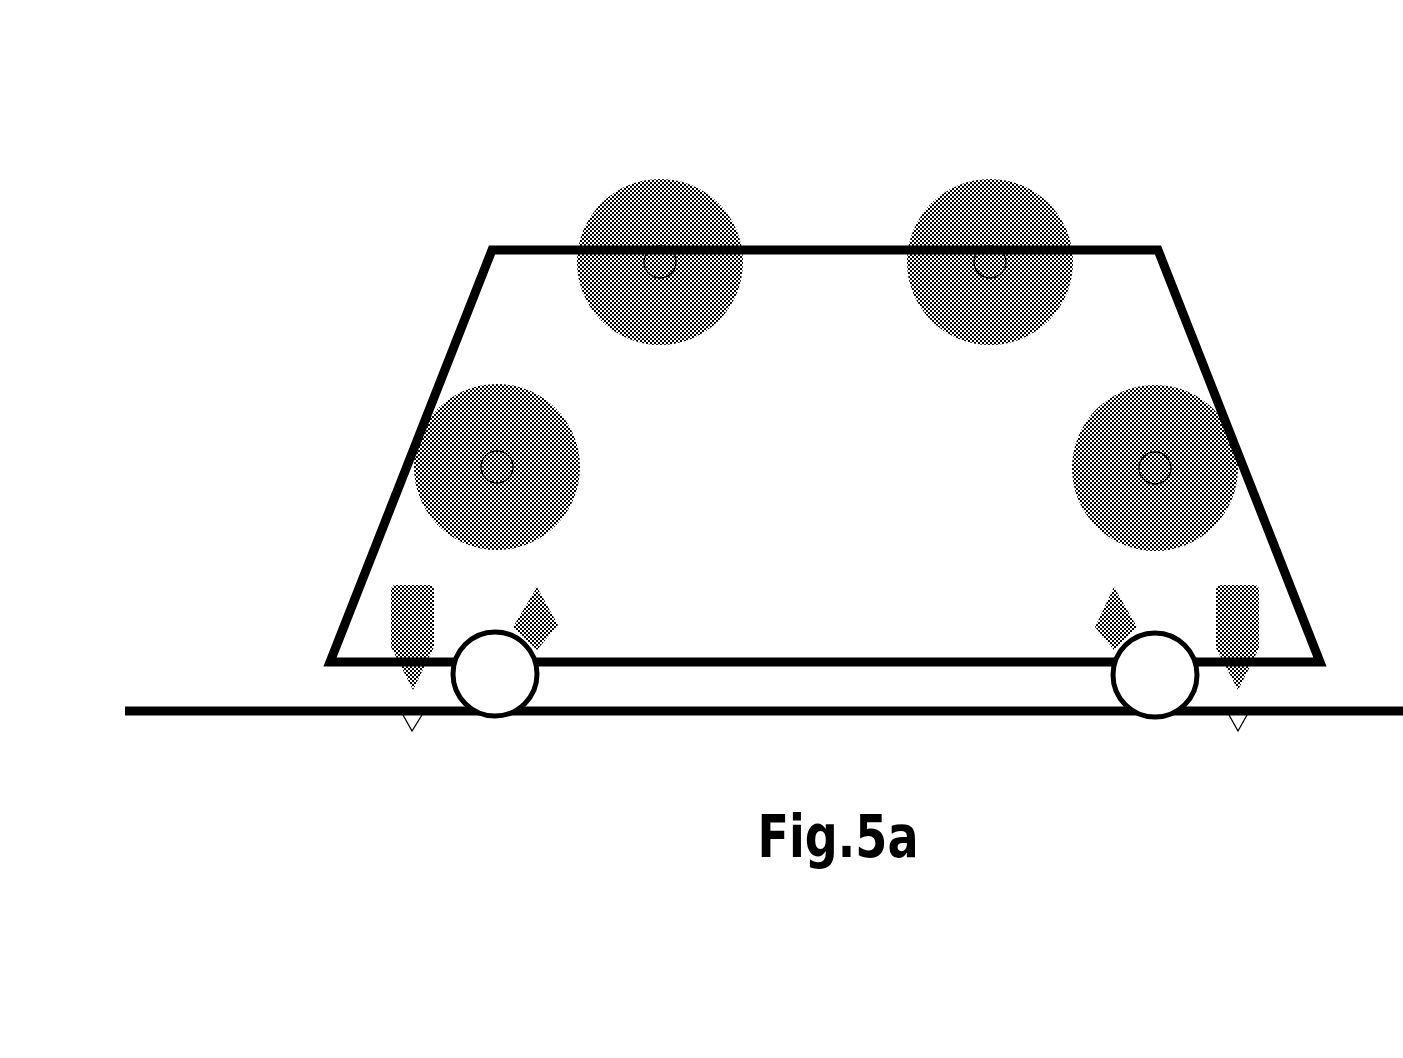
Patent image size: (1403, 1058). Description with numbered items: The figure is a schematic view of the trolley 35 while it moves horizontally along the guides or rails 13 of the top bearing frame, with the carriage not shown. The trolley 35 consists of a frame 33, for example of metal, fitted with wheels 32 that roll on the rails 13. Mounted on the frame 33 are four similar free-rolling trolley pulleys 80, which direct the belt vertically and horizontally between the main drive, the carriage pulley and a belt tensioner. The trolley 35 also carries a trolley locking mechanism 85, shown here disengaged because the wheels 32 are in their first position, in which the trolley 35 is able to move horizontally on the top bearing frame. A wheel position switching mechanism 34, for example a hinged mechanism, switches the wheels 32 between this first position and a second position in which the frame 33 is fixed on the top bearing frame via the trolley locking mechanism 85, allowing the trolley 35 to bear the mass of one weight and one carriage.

The guides or rails 13 is at (267, 707).
The wheels 32 is at (515, 690).
The frame 33 is at (847, 247).
The wheel position switching mechanism 34 is at (1095, 627).
The trolley 35 is at (825, 367).
The trolley pulleys 80 is at (600, 277).
The trolley locking mechanism 85 is at (410, 627).